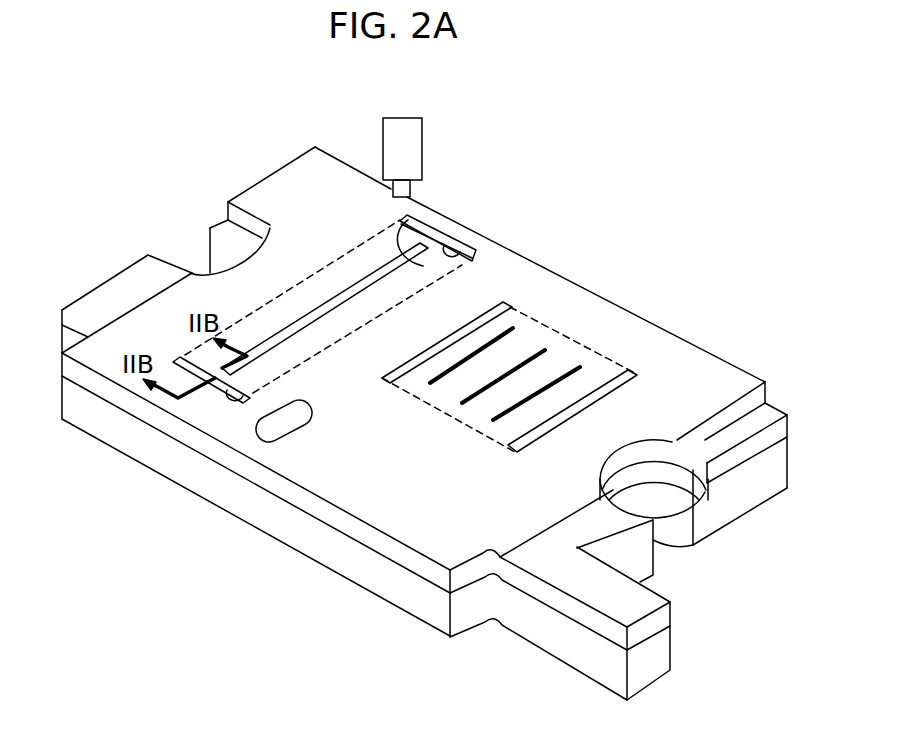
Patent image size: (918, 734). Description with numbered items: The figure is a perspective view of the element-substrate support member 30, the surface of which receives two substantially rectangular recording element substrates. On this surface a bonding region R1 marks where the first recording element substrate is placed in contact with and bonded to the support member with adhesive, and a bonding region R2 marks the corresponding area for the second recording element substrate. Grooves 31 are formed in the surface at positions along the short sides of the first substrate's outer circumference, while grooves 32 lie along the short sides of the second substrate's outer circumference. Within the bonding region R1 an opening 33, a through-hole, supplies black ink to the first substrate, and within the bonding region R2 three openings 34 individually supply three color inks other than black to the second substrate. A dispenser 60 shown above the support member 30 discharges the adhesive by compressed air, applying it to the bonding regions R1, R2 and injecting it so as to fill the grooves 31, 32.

The element-substrate support member 30 is at (85, 271).
The dispenser 60 is at (417, 132).
The opening (through-hole) 33 is at (408, 220).
The grooves 31 is at (463, 248).
The grooves 32 is at (487, 313).
The openings 34 is at (513, 328).
The bonding region R1 is at (353, 333).
The bonding region R2 is at (462, 425).